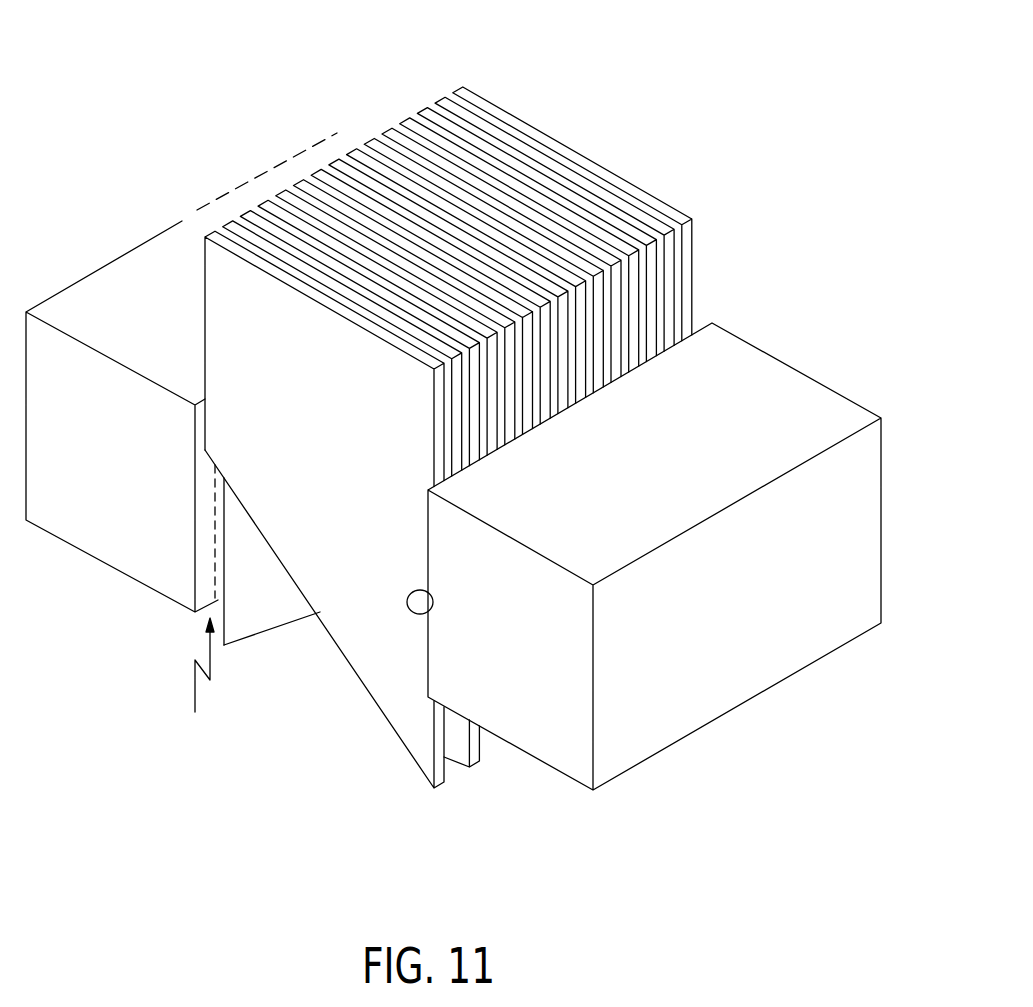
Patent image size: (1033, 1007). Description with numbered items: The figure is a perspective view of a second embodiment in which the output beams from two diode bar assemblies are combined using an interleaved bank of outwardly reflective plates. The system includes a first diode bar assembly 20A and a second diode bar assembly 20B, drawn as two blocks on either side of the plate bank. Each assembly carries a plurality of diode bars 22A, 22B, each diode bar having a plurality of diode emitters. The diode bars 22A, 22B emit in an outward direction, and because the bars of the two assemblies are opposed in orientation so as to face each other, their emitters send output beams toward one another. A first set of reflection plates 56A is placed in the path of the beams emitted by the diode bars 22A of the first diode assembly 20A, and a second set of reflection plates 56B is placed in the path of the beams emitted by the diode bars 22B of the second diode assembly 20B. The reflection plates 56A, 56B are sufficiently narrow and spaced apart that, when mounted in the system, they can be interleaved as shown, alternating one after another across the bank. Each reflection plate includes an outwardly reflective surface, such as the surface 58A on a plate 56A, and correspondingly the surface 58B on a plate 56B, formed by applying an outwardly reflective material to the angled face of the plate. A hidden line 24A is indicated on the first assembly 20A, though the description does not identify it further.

The first diode bar assembly 20A is at (337, 147).
The second diode bar assembly 20B is at (795, 368).
The diode bars of first assembly 22A is at (196, 685).
The diode bars of second assembly 22B is at (433, 608).
The hidden edge of first block 24A is at (215, 557).
The first set of reflection plates 56A is at (356, 421).
The second set of reflection plates 56B is at (296, 619).
The outwardly reflective surface 58A is at (381, 710).
The cut edge of second plates 58B is at (268, 634).